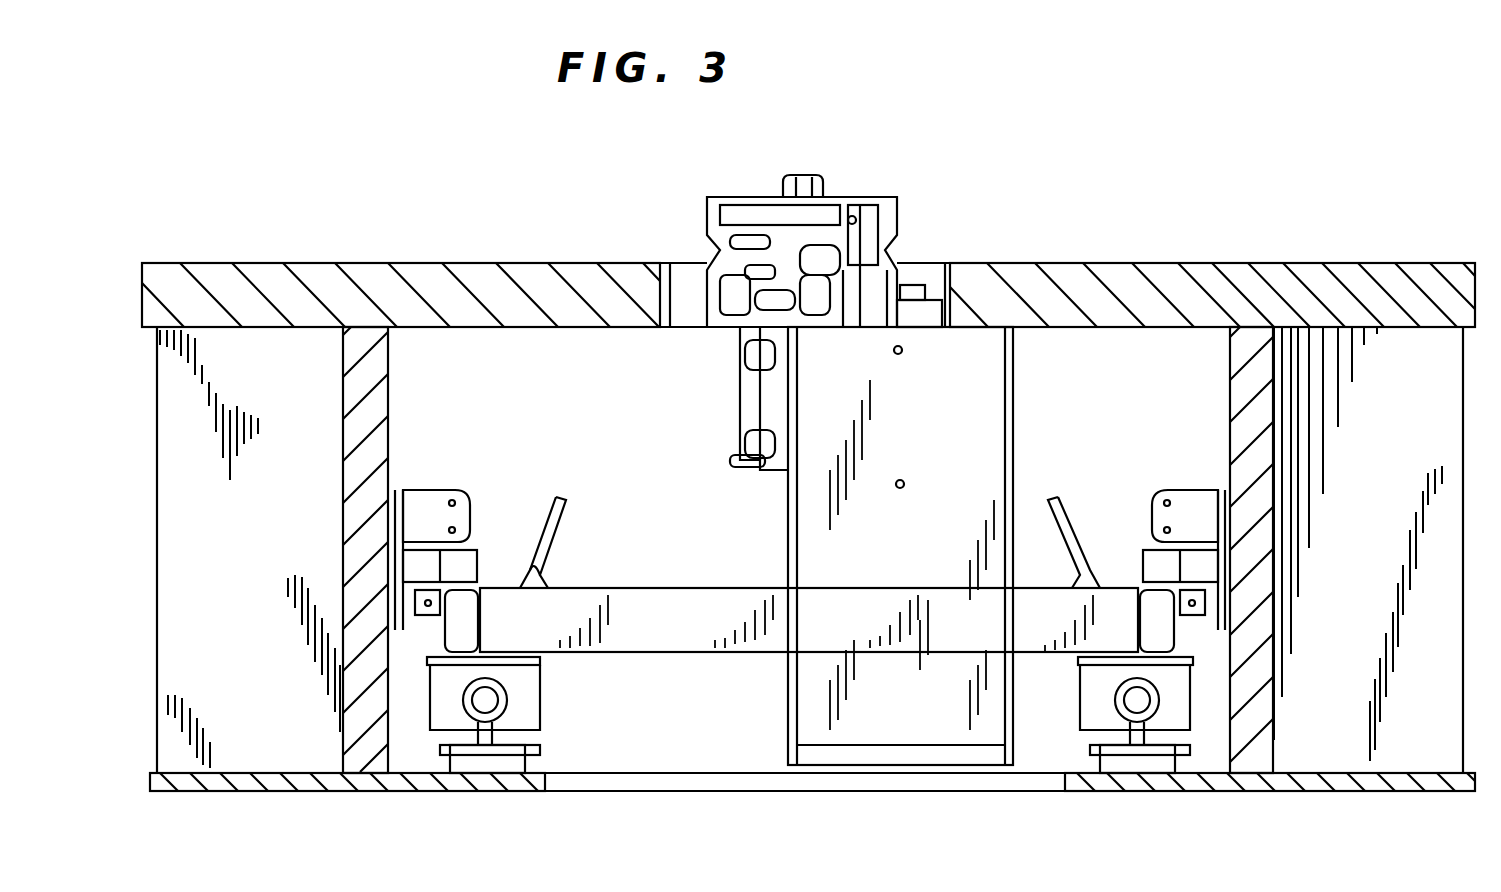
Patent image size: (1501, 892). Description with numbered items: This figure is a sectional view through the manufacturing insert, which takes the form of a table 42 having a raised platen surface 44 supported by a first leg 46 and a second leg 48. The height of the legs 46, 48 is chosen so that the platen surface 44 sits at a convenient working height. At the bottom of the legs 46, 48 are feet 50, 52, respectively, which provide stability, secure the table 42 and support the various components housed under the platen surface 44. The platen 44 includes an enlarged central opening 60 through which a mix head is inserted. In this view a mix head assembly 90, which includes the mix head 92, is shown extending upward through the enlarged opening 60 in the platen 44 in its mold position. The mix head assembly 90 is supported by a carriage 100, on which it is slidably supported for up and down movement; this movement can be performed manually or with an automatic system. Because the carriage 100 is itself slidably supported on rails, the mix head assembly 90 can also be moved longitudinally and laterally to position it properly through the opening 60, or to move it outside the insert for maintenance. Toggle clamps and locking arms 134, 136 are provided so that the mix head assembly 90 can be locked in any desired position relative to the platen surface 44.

The table 42 is at (1160, 272).
The platen surface 44 is at (540, 272).
The first leg 46 is at (375, 388).
The second leg 48 is at (1243, 355).
The foot 50 is at (320, 778).
The foot 52 is at (1197, 780).
The enlarged central opening 60 is at (672, 263).
The mix head assembly 90 is at (870, 197).
The mix head 92 is at (818, 175).
The carriage 100 is at (968, 350).
The locking arm 134 is at (562, 495).
The locking arm 136 is at (1062, 498).